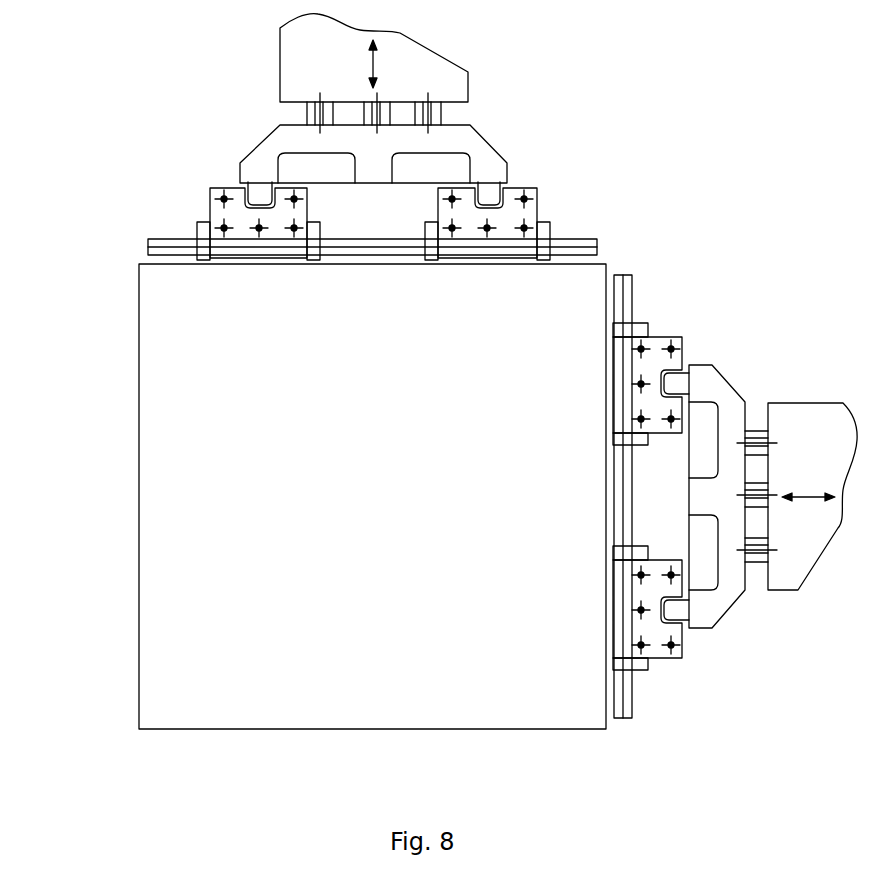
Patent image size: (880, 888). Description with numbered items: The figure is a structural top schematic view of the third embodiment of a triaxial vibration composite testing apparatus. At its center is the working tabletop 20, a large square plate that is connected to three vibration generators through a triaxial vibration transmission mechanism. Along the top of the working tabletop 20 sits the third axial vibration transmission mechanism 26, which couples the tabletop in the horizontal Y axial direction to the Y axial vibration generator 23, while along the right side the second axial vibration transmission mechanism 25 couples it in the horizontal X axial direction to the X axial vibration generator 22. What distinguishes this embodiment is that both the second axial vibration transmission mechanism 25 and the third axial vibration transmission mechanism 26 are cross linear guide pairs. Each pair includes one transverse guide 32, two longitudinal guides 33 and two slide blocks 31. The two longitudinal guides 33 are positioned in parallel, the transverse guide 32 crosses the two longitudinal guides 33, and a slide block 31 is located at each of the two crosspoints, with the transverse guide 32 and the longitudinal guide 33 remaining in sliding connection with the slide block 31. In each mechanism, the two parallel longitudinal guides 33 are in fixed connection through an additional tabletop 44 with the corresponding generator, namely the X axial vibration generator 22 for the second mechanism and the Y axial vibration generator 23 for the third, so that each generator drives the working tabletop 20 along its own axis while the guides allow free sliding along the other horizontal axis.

The working tabletop 20 is at (227, 437).
The X axial vibration generator 22 is at (787, 580).
The Y axial vibration generator 23 is at (297, 65).
The second axial vibration transmission mechanism 25 is at (692, 328).
The third axial vibration transmission mechanism 26 is at (550, 192).
The slide block 31 is at (220, 213).
The transverse guide 32 is at (167, 247).
The longitudinal guide 33 is at (252, 200).
The additional tabletop 44 is at (458, 142).